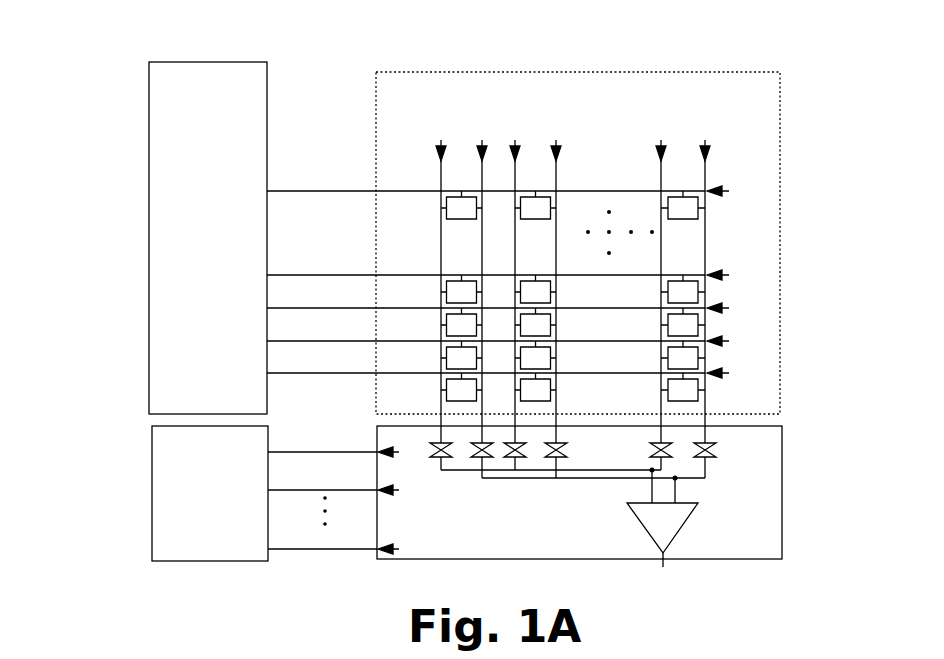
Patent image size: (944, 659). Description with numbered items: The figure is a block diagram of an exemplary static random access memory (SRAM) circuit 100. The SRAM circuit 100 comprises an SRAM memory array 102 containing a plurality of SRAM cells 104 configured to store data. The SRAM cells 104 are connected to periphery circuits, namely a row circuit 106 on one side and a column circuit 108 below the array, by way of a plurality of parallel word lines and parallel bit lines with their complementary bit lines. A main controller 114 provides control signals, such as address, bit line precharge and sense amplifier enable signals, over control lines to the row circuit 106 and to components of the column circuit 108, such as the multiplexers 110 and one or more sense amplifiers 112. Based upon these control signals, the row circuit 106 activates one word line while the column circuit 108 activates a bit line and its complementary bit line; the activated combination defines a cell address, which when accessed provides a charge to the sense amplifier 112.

The SRAM circuit 100 is at (105, 34).
The SRAM memory array 102 is at (560, 275).
The SRAM cells 104 is at (684, 219).
The row circuit 106 is at (208, 238).
The column circuit 108 is at (613, 496).
The multiplexers 110 is at (716, 450).
The sense amplifiers 112 is at (680, 528).
The main controller 114 is at (264, 493).